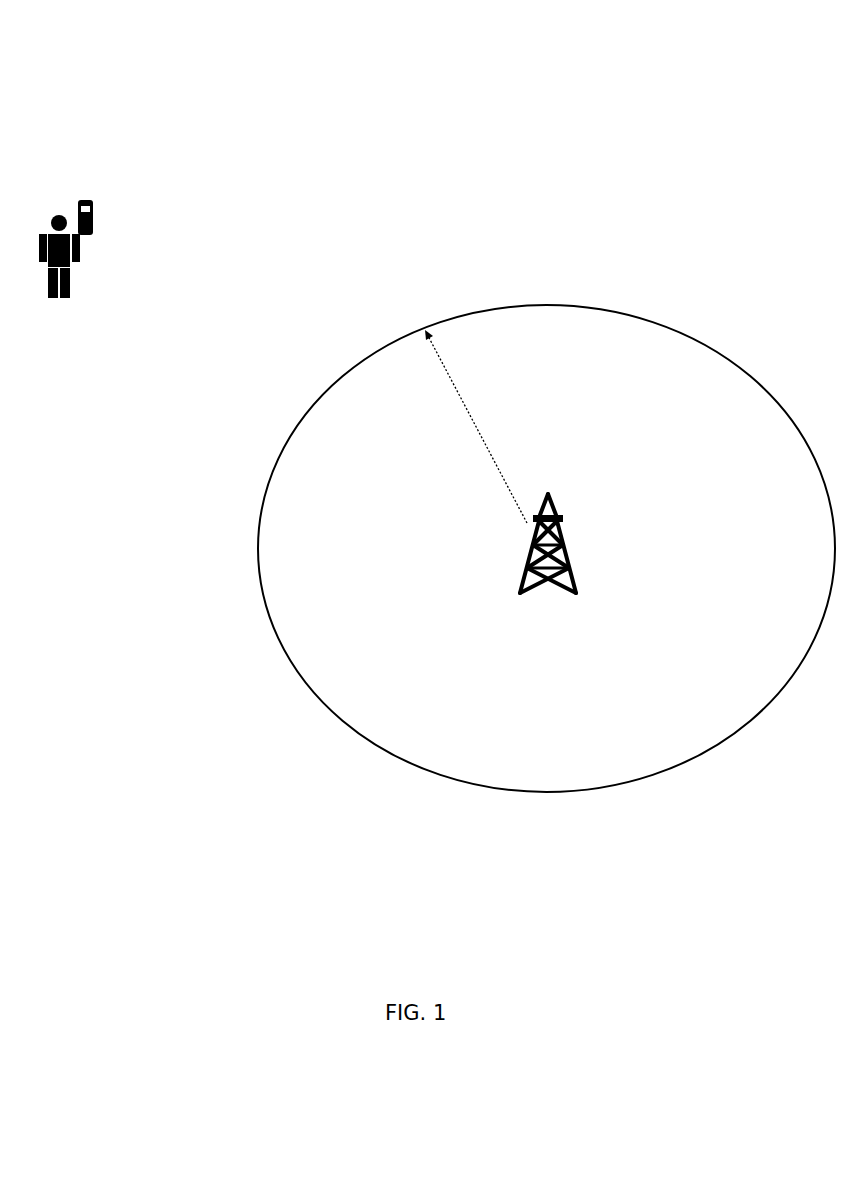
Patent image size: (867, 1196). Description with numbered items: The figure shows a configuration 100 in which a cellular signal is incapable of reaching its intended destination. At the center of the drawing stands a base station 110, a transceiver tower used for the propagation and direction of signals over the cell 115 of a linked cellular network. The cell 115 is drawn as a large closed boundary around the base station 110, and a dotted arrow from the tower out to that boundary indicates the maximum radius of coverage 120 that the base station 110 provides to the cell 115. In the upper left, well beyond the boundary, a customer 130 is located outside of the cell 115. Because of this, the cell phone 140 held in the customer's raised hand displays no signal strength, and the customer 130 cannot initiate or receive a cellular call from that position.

The configuration 100 is at (670, 118).
The base station 110 is at (533, 565).
The cell 115 is at (638, 710).
The maximum radius of coverage 120 is at (455, 385).
The customer 130 is at (70, 270).
The cell phone 140 is at (93, 207).